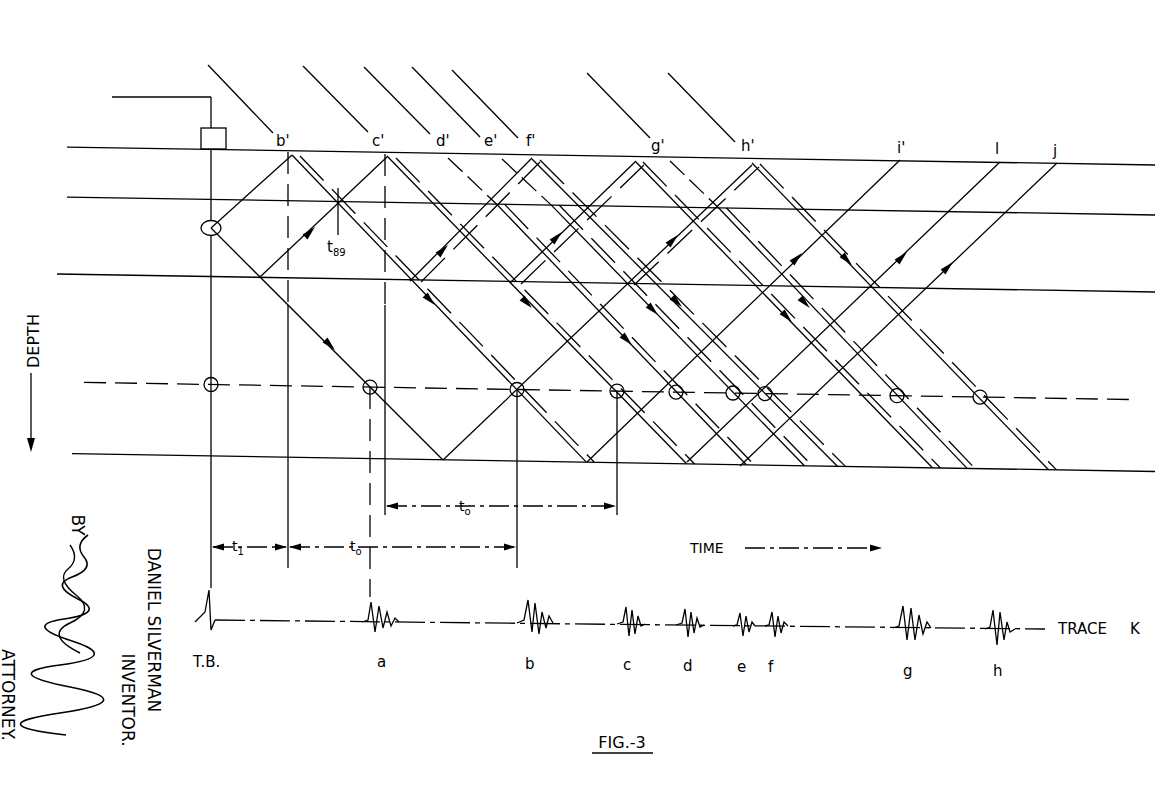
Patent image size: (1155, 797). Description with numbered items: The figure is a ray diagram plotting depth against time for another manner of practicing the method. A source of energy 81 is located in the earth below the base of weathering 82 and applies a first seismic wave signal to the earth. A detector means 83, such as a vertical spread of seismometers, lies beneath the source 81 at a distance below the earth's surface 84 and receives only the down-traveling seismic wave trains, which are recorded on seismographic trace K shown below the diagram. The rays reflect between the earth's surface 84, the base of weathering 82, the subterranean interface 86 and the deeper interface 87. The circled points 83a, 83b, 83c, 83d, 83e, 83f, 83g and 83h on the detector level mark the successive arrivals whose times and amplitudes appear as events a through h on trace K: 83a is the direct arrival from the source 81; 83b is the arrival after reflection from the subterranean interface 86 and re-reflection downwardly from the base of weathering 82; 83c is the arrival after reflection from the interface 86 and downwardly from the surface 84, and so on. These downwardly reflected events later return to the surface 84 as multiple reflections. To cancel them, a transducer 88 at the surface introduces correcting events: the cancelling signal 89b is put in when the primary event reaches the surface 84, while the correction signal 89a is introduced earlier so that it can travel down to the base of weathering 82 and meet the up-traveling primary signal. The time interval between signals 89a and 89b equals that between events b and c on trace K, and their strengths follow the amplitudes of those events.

The source of energy 81 is at (202, 231).
The base of weathering 82 is at (126, 196).
The detector means 83 is at (206, 381).
The arrival at detector of event a 83a is at (366, 394).
The arrival at detector of event b 83b is at (511, 388).
The arrival at detector of event c 83c is at (613, 398).
The arrival at detector of event d 83d is at (673, 400).
The arrival at detector of event e 83e is at (743, 386).
The arrival at detector of event f 83f is at (781, 400).
The arrival at detector of event g 83g is at (905, 398).
The arrival at detector of event h 83h is at (989, 392).
The earth's surface 84 is at (126, 146).
The subterranean interface 86 is at (143, 278).
The interface 87 is at (177, 452).
The transducer 88 is at (203, 146).
The correction signal 89a is at (222, 79).
The cancelling signal 89b is at (323, 84).